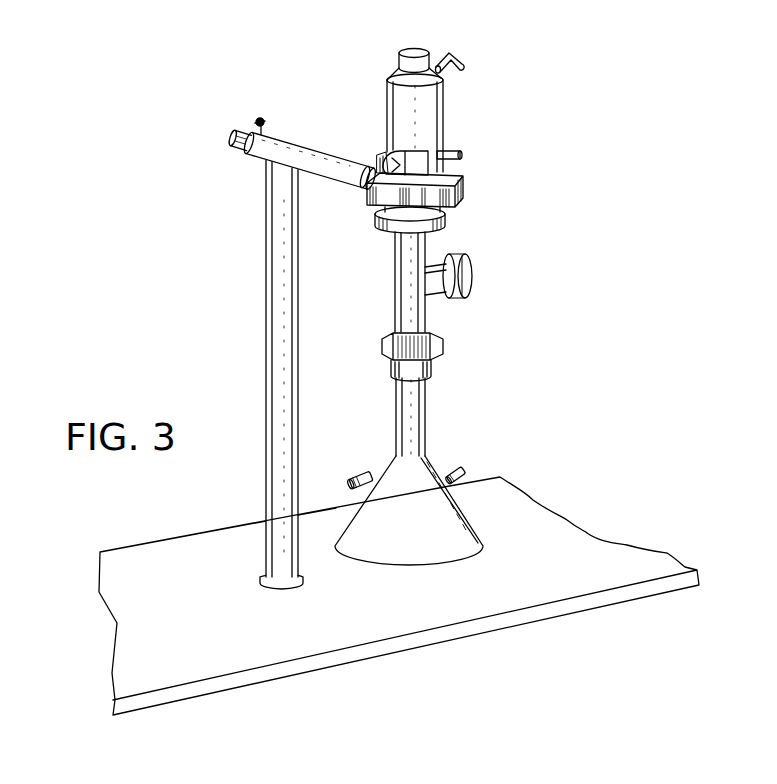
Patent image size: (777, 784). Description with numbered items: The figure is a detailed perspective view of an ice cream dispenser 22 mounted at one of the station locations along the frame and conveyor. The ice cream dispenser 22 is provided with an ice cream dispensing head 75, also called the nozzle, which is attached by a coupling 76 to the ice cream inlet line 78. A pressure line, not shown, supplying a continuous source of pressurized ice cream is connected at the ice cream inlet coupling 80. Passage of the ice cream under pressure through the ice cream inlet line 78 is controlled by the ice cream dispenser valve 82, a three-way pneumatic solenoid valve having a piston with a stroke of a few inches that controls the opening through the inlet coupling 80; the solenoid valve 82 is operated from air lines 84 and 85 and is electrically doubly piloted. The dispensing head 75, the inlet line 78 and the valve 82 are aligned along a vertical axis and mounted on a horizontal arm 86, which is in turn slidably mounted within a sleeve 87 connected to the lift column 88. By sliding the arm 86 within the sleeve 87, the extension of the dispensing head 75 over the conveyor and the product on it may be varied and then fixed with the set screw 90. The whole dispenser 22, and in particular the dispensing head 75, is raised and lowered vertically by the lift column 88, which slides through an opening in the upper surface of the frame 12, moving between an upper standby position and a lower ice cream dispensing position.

The frame 12 is at (98, 592).
The ice cream dispenser 22 is at (527, 188).
The ice cream dispensing head 75 is at (447, 447).
The coupling 76 is at (444, 343).
The ice cream inlet line 78 is at (427, 317).
The ice cream inlet coupling 80 is at (472, 268).
The ice cream dispenser valve 82 is at (444, 118).
The air line 84 is at (455, 52).
The air line 85 is at (462, 150).
The horizontal arm 86 is at (237, 131).
The sleeve 87 is at (312, 137).
The lift column 88 is at (266, 308).
The set screw 90 is at (258, 118).